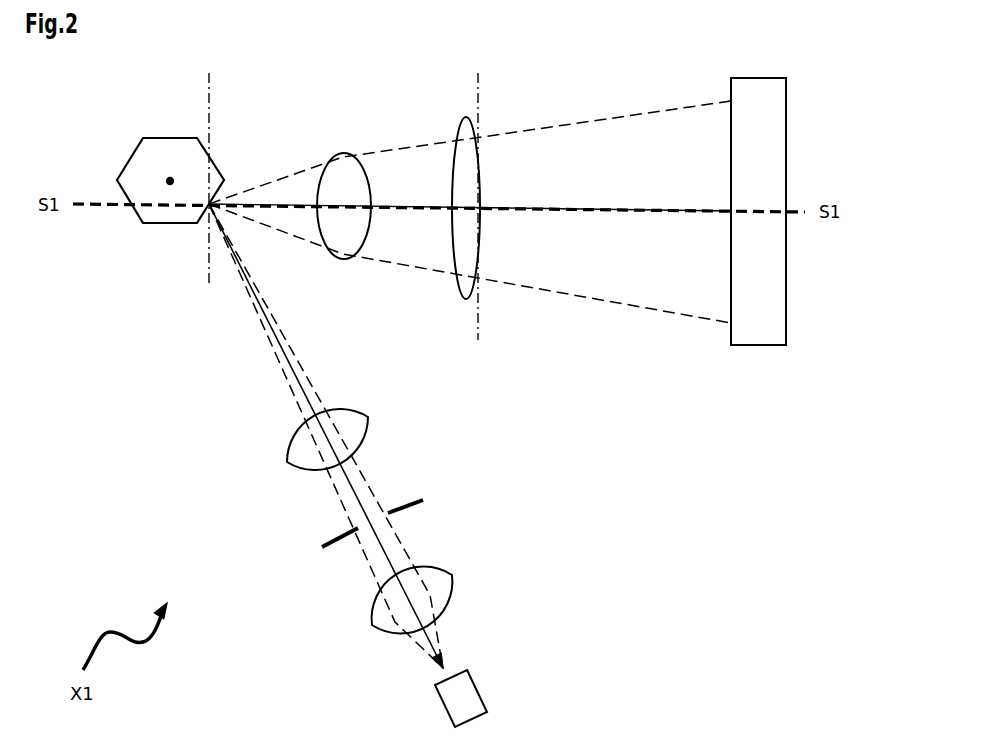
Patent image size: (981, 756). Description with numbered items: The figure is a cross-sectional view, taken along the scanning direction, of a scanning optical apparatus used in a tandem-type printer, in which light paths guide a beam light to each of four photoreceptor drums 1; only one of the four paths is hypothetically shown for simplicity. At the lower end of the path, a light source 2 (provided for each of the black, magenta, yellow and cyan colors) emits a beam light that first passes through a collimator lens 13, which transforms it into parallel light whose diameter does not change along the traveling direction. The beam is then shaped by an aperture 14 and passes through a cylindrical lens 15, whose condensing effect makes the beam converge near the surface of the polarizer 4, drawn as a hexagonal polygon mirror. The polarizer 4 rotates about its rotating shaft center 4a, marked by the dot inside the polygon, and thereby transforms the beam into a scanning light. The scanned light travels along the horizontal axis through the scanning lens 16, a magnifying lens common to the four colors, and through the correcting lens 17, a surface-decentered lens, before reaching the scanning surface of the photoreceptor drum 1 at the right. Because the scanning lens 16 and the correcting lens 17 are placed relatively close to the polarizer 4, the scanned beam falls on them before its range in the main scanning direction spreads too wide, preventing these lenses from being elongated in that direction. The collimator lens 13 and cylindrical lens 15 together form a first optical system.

The photoreceptor drum 1 is at (755, 345).
The light source 2 is at (487, 690).
The polarizer 4 is at (167, 223).
The rotating shaft center 4a is at (170, 177).
The collimator lens 13 is at (452, 577).
The aperture 14 is at (389, 512).
The cylindrical lens 15 is at (302, 472).
The scanning lens 16 is at (344, 259).
The correcting lens 17 is at (465, 299).